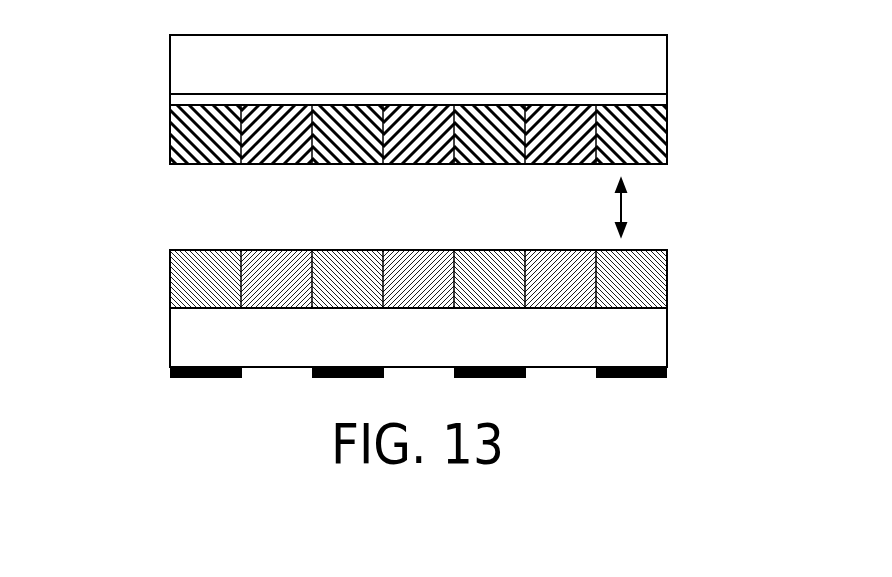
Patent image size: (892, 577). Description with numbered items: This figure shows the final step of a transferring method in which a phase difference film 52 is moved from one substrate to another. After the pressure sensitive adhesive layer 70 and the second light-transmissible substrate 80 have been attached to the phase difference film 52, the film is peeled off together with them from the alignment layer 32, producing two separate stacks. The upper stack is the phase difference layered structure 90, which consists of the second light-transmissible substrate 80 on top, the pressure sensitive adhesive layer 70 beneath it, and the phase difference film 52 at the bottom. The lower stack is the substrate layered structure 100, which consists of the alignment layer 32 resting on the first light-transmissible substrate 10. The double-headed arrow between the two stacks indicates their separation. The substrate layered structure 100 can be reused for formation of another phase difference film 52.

The first light-transmissible substrate 10 is at (170, 338).
The alignment layer 32 is at (158, 250).
The phase difference film 52 is at (158, 105).
The pressure sensitive adhesive layer 70 is at (170, 97).
The second light-transmissible substrate 80 is at (170, 60).
The phase difference layered structure 90 is at (402, 91).
The substrate layered structure 100 is at (409, 314).